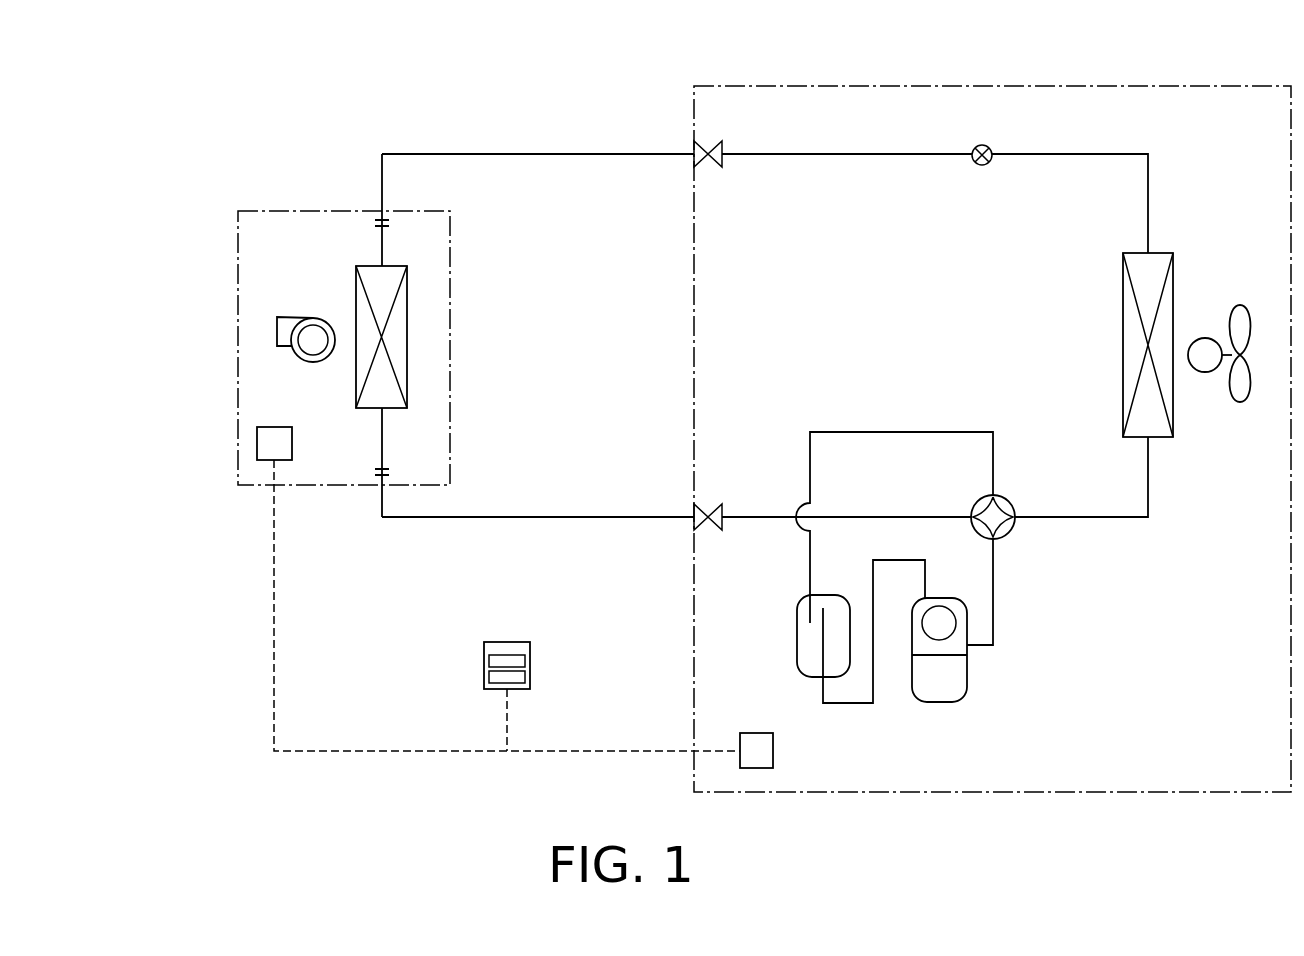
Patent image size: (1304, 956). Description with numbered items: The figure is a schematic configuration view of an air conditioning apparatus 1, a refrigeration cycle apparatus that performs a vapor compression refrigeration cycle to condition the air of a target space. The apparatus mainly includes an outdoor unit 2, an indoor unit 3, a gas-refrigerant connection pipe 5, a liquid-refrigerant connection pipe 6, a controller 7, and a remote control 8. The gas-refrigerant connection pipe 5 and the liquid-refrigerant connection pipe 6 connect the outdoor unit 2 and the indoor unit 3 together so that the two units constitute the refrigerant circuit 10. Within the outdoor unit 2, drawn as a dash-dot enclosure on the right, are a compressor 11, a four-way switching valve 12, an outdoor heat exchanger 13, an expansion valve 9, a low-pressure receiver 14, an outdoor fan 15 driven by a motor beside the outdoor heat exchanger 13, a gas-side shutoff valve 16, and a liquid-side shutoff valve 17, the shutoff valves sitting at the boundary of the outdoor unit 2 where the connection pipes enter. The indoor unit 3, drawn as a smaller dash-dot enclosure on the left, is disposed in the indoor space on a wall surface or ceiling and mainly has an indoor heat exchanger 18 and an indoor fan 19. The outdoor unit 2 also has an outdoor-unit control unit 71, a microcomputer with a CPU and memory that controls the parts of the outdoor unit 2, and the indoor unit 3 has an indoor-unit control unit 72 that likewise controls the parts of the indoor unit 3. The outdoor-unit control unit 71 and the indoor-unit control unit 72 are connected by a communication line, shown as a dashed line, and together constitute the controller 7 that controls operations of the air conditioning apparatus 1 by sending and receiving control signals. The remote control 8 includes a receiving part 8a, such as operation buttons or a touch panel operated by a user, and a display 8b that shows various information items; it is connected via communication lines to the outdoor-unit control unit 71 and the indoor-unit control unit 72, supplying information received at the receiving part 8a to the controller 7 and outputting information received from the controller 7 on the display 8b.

The air conditioning apparatus 1 is at (193, 145).
The outdoor unit 2 is at (1195, 86).
The indoor unit 3 is at (413, 211).
The gas-refrigerant connection pipe 5 is at (583, 516).
The liquid-refrigerant connection pipe 6 is at (583, 157).
The controller 7 is at (250, 730).
The remote control 8 is at (531, 645).
The receiving part 8a is at (527, 660).
The display 8b is at (527, 678).
The expansion valve 9 is at (980, 144).
The refrigerant circuit 10 is at (653, 106).
The compressor 11 is at (938, 705).
The four-way switching valve 12 is at (1013, 500).
The outdoor heat exchanger 13 is at (1122, 345).
The low-pressure receiver 14 is at (797, 634).
The outdoor fan 15 is at (1240, 292).
The gas-side shutoff valve 16 is at (712, 503).
The liquid-side shutoff valve 17 is at (718, 167).
The indoor heat exchanger 18 is at (356, 375).
The indoor fan 19 is at (301, 313).
The outdoor-unit control unit 71 is at (773, 750).
The indoor-unit control unit 72 is at (292, 443).